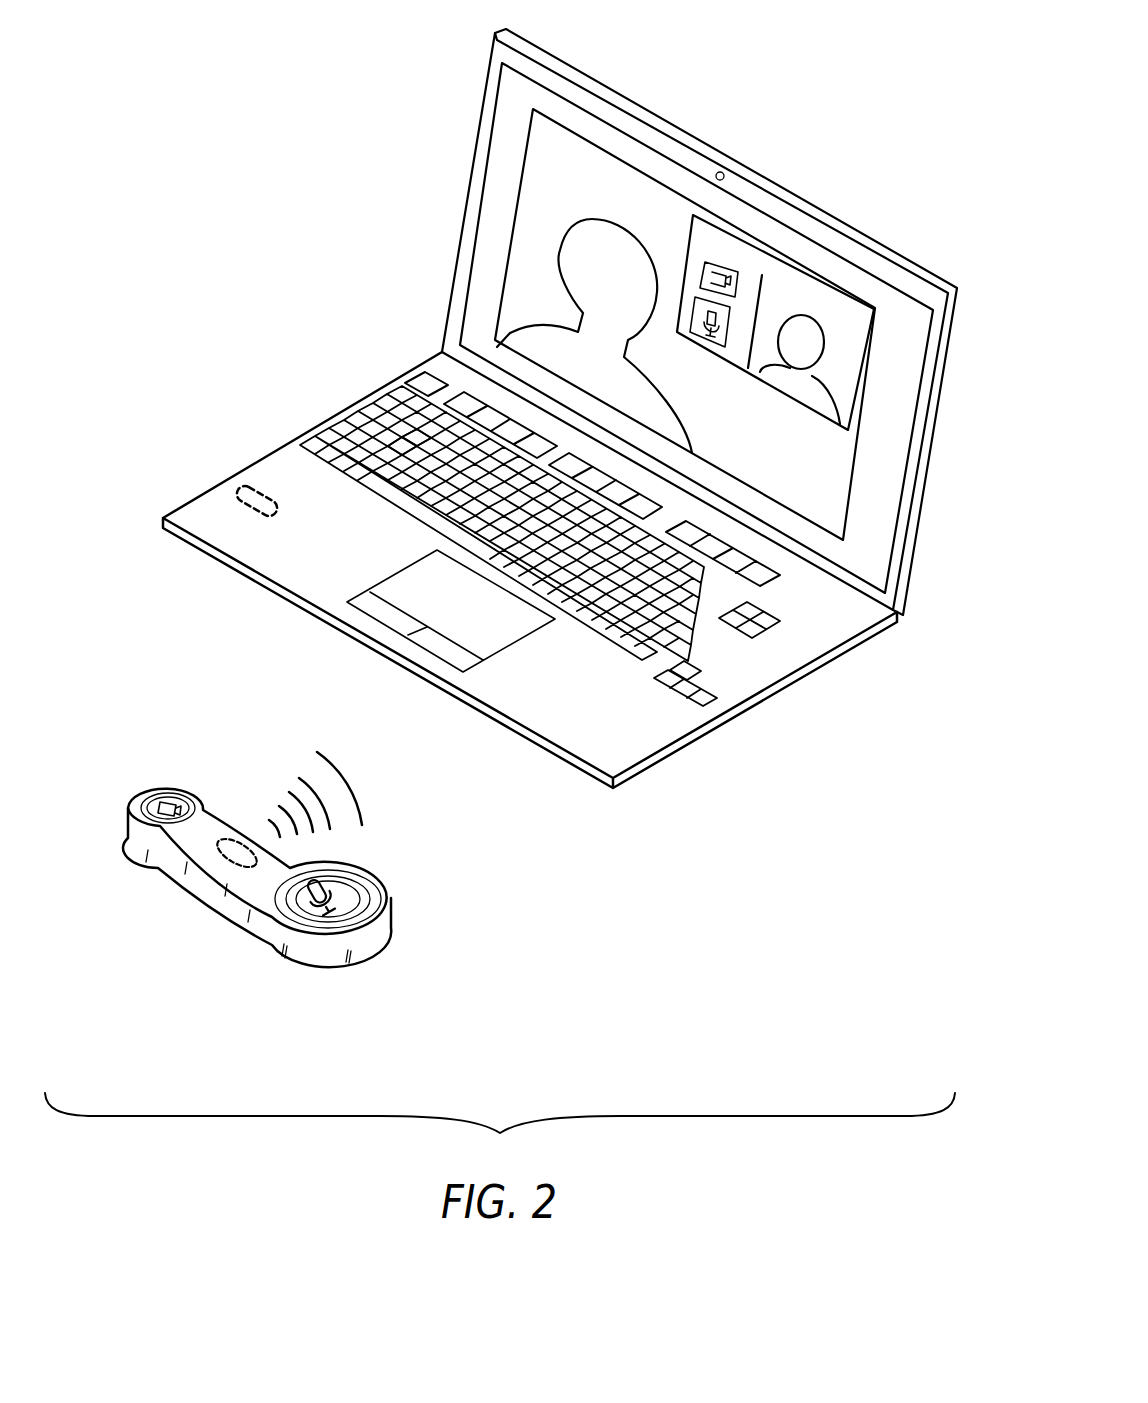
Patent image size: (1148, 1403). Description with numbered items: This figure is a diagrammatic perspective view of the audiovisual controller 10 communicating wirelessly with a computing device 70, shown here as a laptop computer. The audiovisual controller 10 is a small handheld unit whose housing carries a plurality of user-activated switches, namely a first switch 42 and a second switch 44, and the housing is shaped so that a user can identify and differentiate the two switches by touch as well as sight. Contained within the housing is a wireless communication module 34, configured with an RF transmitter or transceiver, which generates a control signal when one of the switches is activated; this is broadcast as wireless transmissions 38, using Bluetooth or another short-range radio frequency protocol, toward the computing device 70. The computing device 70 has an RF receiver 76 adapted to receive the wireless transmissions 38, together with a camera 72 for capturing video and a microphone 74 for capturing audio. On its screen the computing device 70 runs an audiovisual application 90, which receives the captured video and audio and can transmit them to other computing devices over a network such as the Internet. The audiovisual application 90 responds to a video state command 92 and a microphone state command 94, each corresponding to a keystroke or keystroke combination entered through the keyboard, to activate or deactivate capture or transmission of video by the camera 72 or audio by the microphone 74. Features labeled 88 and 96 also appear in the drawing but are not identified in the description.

The audiovisual controller 10 is at (385, 942).
The wireless communication module 34 is at (242, 845).
The wireless transmissions 38 is at (362, 800).
The first switch 42 is at (298, 910).
The second switch 44 is at (158, 820).
The computing device 70 is at (573, 74).
The camera 72 is at (723, 171).
The microphone 74 is at (810, 576).
The RF receiver 76 is at (262, 490).
The indicator label 88 is at (799, 577).
The audiovisual application 90 is at (852, 336).
The video state command 92 is at (405, 452).
The microphone state command 94 is at (430, 438).
The self-view window 96 is at (813, 325).